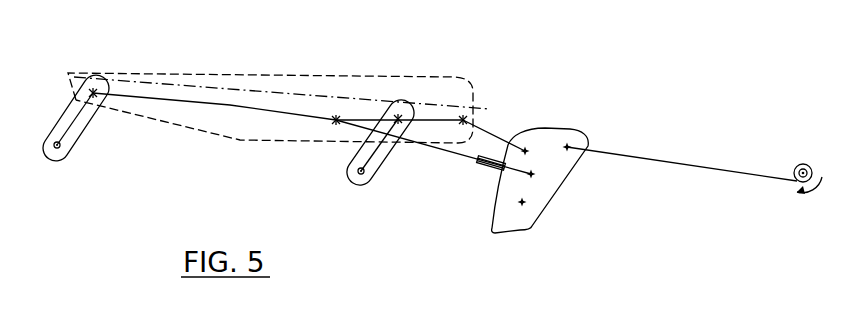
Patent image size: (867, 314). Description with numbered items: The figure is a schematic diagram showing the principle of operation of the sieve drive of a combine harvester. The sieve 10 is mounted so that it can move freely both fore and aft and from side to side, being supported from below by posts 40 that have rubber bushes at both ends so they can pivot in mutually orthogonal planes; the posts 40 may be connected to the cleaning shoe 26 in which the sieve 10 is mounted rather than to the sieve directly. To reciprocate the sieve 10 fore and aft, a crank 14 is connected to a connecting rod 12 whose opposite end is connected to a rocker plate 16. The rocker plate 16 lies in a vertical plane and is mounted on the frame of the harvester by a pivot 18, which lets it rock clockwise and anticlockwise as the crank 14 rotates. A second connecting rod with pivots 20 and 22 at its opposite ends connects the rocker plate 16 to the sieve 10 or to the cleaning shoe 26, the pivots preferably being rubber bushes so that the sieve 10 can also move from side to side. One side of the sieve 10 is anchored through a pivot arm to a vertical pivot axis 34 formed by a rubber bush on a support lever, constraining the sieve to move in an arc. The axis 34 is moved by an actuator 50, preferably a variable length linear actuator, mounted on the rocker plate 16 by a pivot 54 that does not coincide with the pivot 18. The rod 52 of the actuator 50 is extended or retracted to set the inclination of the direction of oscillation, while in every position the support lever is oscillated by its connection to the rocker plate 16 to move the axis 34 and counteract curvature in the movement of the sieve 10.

The sieve 10 is at (296, 92).
The connecting rod 12 is at (697, 163).
The crank 14 is at (805, 165).
The rocker plate 16 is at (556, 128).
The pivot 18 is at (527, 205).
The pivot 20 is at (525, 147).
The pivot 22 is at (460, 118).
The cleaning shoe 26 is at (216, 122).
The vertical pivot axis 34 is at (338, 116).
The posts 40 is at (78, 137).
The actuator 50 is at (483, 169).
The rod 52 is at (448, 153).
The pivot 54 is at (536, 175).